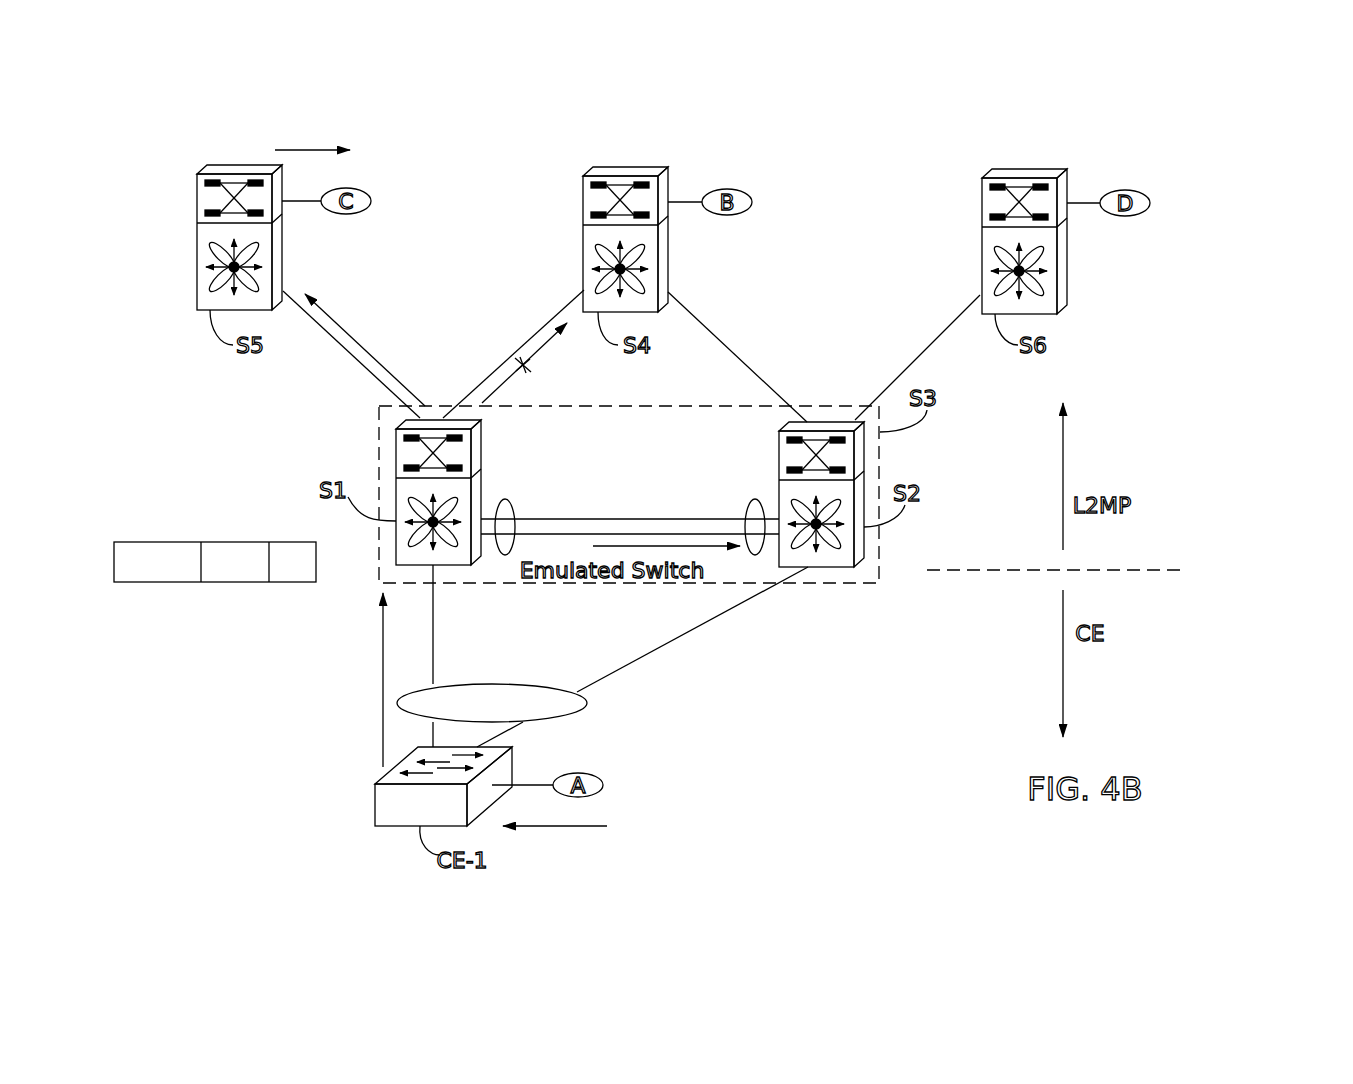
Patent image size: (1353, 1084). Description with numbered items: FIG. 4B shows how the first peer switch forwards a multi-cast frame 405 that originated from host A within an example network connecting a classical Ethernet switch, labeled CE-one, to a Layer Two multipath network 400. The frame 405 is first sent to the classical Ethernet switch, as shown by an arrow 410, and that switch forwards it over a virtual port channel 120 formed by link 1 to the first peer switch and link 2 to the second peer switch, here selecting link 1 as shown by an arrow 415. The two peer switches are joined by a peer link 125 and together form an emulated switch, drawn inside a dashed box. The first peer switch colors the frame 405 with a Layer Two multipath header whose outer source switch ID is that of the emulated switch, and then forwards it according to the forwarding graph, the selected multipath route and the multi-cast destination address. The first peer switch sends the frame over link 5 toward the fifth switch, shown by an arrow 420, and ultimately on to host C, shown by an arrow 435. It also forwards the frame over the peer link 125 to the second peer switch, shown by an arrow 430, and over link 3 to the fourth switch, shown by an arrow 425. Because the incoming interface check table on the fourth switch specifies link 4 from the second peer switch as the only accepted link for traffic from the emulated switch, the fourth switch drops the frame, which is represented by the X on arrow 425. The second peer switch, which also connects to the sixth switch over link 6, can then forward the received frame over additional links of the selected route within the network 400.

The link 1 is at (433, 655).
The link 2 is at (677, 640).
The link 3 is at (510, 357).
The link 4 is at (735, 350).
The link 5 is at (333, 335).
The link 6 is at (915, 350).
The virtual port channel 120 is at (587, 700).
The peer link 125 is at (700, 519).
The L2MP network 400 is at (1215, 330).
The frame 405 is at (182, 592).
The arrow 410 is at (552, 827).
The arrow 415 is at (383, 662).
The arrow 420 is at (377, 357).
The arrow 425 is at (543, 347).
The arrow 430 is at (708, 548).
The arrow 435 is at (305, 150).